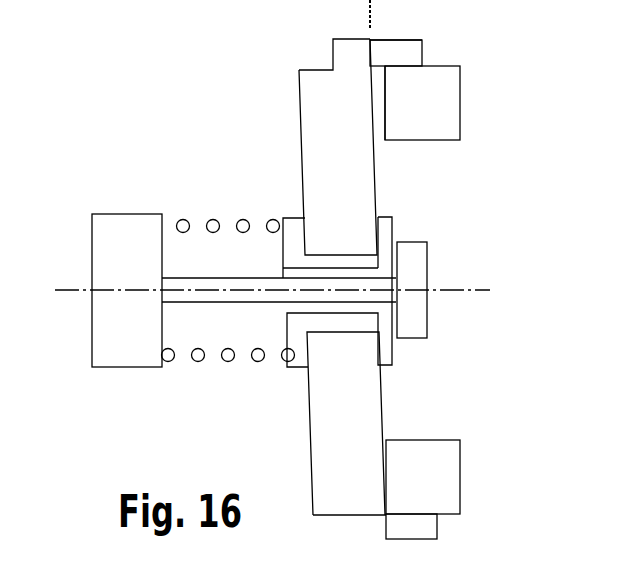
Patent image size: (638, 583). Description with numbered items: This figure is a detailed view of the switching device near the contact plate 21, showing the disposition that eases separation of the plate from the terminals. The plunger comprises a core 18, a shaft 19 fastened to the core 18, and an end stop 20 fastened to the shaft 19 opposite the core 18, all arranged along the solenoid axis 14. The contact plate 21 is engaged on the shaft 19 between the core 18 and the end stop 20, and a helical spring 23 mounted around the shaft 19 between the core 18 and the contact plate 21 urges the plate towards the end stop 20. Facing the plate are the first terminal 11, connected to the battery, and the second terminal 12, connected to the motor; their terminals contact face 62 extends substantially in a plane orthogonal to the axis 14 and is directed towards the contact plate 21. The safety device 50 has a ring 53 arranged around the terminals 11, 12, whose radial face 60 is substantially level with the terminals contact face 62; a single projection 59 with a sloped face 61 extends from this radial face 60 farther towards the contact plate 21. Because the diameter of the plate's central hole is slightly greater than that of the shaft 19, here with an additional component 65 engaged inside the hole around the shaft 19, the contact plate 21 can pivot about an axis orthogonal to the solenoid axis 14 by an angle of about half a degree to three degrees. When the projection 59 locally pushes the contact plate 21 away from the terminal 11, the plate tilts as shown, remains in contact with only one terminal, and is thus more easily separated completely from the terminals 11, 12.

The first terminal 11 is at (432, 98).
The second terminal 12 is at (432, 482).
The solenoid axis 14 is at (70, 288).
The core 18 is at (141, 262).
The shaft 19 is at (193, 288).
The end stop 20 is at (415, 317).
The contact plate 21 is at (333, 473).
The helical spring 23 is at (203, 362).
The safety device 50 is at (418, 53).
The ring 53 is at (413, 527).
The projection 59 is at (387, 50).
The radial face 60 is at (386, 527).
The sloped face 61 is at (370, 48).
The terminals contact face 62 is at (385, 117).
The additional component 65 is at (293, 231).